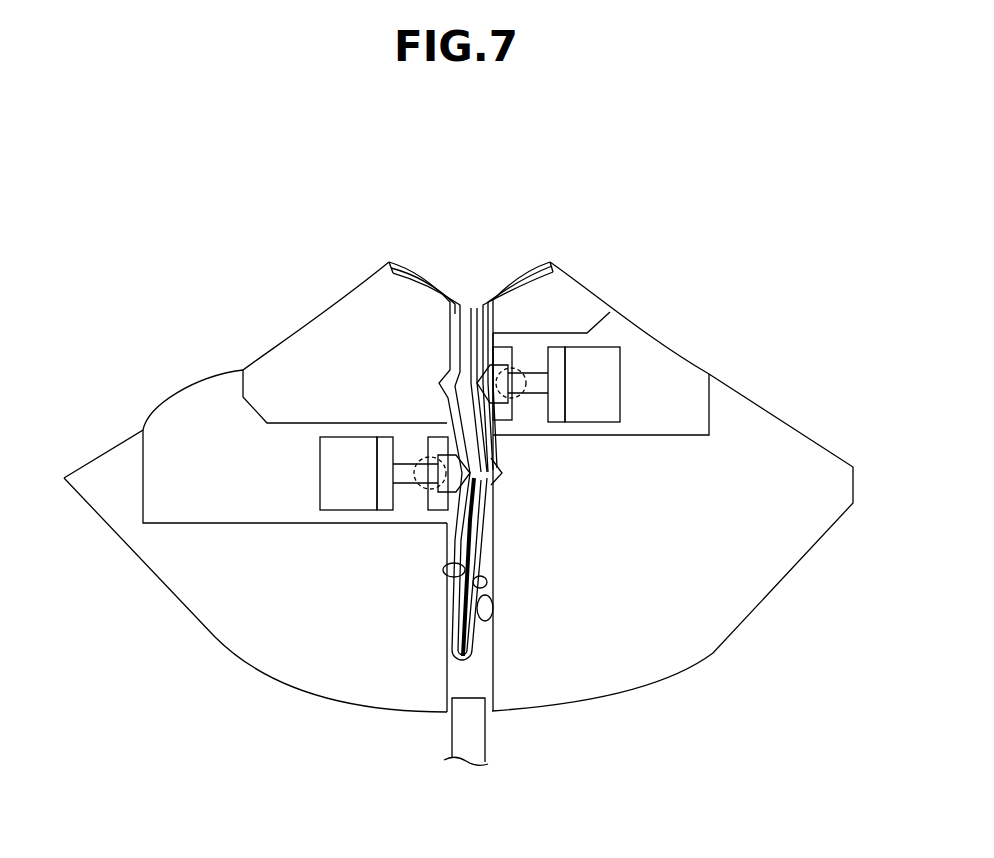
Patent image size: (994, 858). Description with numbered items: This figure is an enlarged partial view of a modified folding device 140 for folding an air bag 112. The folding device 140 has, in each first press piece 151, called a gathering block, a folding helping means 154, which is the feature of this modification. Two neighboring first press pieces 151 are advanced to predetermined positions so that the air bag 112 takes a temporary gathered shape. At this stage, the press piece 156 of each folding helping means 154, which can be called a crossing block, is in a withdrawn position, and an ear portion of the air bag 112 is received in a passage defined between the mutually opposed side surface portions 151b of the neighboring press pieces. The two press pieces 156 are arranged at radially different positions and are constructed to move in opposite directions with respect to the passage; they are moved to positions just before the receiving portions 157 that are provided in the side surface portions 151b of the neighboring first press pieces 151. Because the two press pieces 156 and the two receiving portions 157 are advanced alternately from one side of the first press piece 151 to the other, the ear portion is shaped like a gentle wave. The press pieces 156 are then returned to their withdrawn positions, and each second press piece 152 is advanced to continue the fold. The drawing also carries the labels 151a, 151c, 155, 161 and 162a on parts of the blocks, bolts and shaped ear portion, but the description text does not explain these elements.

The air bag 112 is at (482, 590).
The folding device 140 is at (749, 329).
The first press piece 151 is at (252, 607).
The blade portions 151a is at (418, 285).
The side surface portion 151b is at (445, 588).
The mounting plate 151c is at (157, 453).
The second press piece 152 is at (452, 745).
The folding helping means 154 is at (360, 500).
The motor body 155 is at (333, 500).
The press piece (crossing block) 156 is at (457, 453).
The receiving portion 157 is at (442, 380).
The thin film layer 161 is at (412, 273).
The rod 162a is at (486, 605).